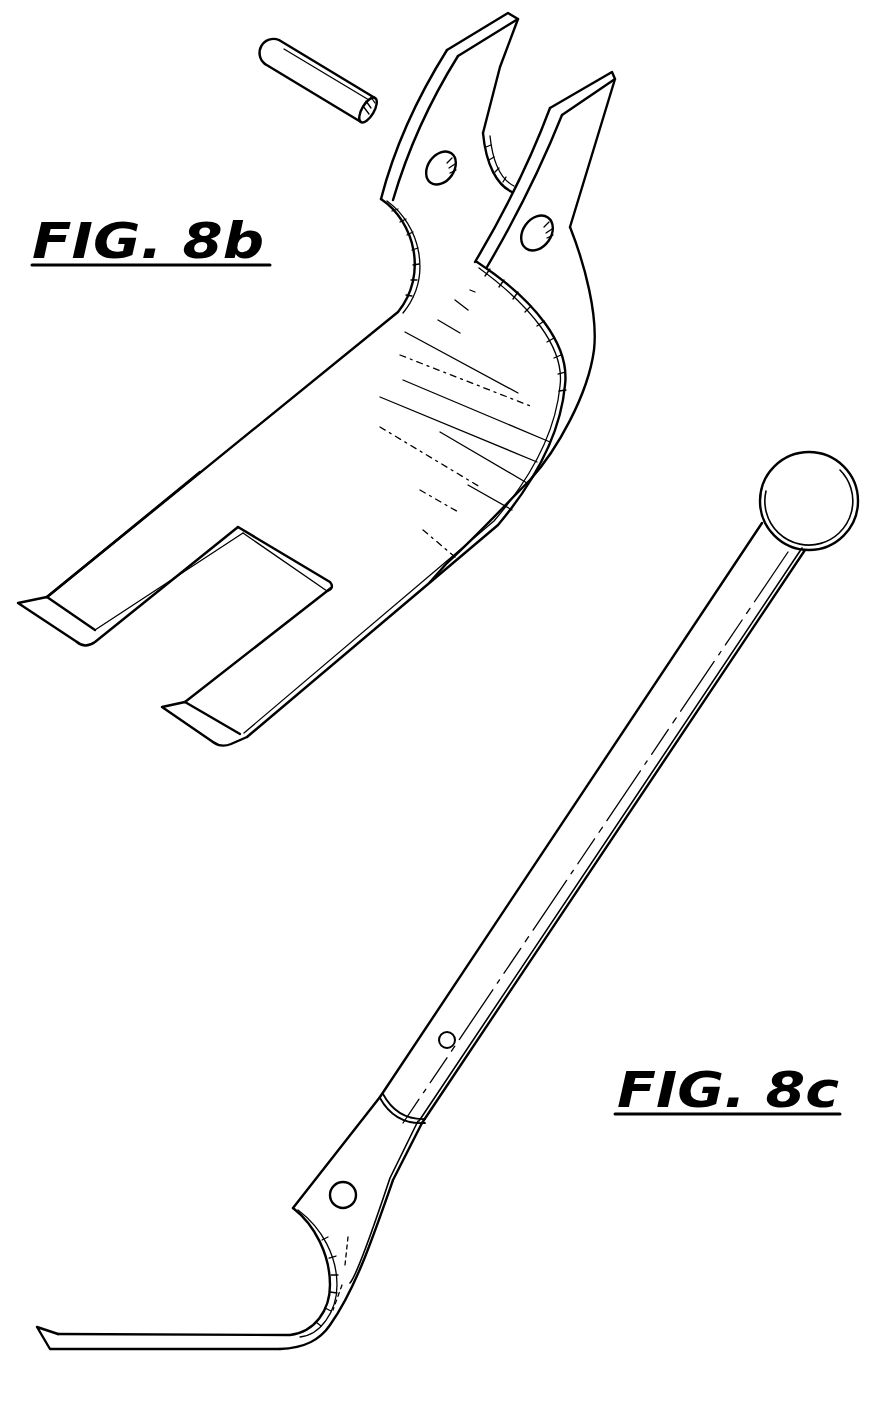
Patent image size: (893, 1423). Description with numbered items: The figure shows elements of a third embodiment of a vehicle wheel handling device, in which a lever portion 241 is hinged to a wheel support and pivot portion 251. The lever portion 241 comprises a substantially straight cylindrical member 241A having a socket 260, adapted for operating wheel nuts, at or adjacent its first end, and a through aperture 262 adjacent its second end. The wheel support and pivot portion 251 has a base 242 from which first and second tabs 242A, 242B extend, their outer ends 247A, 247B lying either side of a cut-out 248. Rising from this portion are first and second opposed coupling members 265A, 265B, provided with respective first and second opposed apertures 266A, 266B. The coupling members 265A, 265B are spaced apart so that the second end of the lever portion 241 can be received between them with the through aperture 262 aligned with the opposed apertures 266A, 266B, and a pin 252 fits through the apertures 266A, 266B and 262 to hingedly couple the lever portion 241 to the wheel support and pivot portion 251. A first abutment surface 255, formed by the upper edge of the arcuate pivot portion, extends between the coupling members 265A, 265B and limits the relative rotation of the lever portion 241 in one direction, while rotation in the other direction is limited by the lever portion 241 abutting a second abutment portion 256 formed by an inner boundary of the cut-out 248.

In FIG. 8B, the pin 252 is at (343, 87).
In FIG. 8B, the second opposed coupling member 265B is at (497, 50).
In FIG. 8B, the first abutment surface 255 is at (503, 157).
In FIG. 8B, the first opposed coupling member 265A is at (593, 113).
In FIG. 8C, the first opposed coupling member 265A is at (387, 1137).
In FIG. 8B, the second opposed aperture 266B is at (428, 168).
In FIG. 8B, the first opposed aperture 266A is at (540, 237).
In FIG. 8C, the first opposed aperture 266A is at (350, 1198).
In FIG. 8B, the wheel support and pivot portion 251 is at (361, 421).
In FIG. 8C, the wheel support and pivot portion 251 is at (292, 1221).
In FIG. 8B, the second tab 242B is at (130, 596).
In FIG. 8B, the second abutment portion 256 is at (297, 563).
In FIG. 8B, the cut-out 248 is at (269, 600).
In FIG. 8B, the end of second tab 247B is at (62, 628).
In FIG. 8B, the wheel support base 242 is at (250, 647).
In FIG. 8C, the wheel support base 242 is at (137, 1340).
In FIG. 8B, the first tab 242A is at (258, 758).
In FIG. 8B, the end of first tab 247A is at (203, 730).
In FIG. 8C, the socket 260 is at (813, 465).
In FIG. 8C, the lever portion 241 is at (447, 872).
In FIG. 8C, the cylindrical member 241A is at (538, 897).
In FIG. 8C, the through aperture 262 is at (438, 1040).